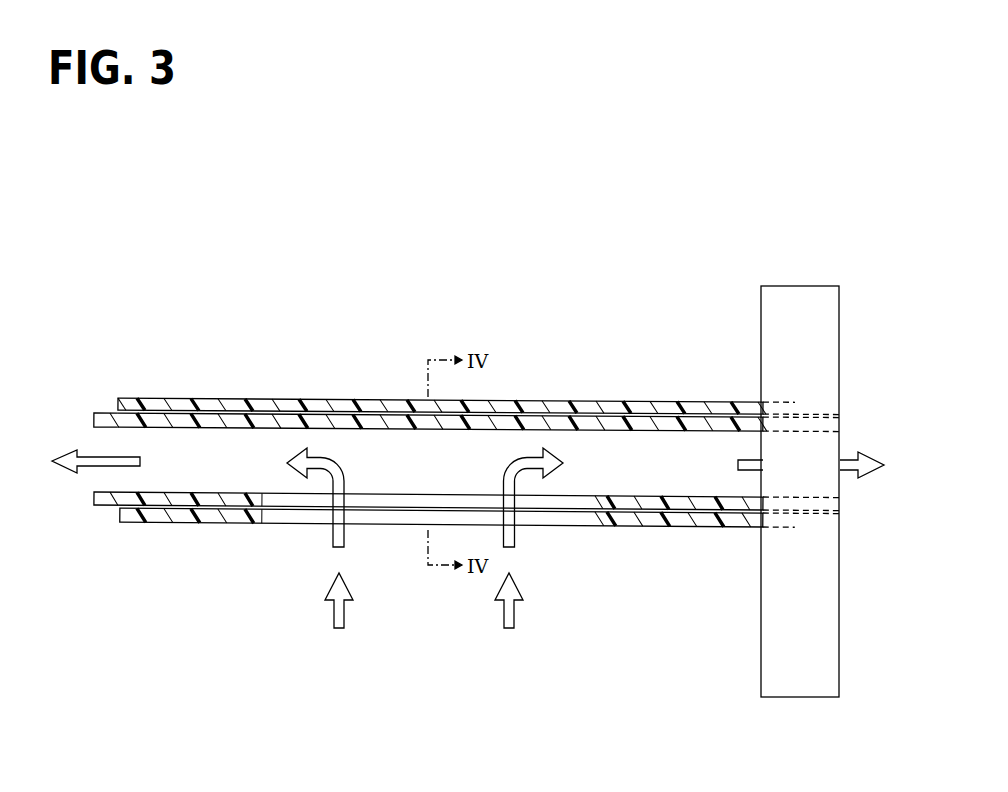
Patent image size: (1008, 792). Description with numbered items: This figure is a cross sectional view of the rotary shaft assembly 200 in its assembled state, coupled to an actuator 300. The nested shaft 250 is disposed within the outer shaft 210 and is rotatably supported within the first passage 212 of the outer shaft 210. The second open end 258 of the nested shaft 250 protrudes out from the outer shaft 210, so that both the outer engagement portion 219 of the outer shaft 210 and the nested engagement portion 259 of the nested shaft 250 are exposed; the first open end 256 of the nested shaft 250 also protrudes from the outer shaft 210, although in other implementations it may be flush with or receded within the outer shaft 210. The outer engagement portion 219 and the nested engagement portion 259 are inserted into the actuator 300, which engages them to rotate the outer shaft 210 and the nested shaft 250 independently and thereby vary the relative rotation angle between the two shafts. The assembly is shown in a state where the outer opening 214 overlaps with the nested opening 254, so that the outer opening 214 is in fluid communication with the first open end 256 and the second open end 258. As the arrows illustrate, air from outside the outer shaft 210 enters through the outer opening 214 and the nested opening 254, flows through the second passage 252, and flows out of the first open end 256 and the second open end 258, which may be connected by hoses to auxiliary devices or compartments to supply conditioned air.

The rotary shaft assembly 200 is at (461, 544).
The outer shaft 210 is at (428, 501).
The first passage 212 is at (441, 517).
The outer opening 214 is at (433, 517).
The outer engagement portion 219 is at (751, 416).
The nested shaft 250 is at (191, 507).
The second passage 252 is at (489, 390).
The nested opening 254 is at (432, 501).
The first open end 256 is at (801, 416).
The second open end 258 is at (110, 412).
The nested engagement portion 259 is at (801, 512).
The actuator 300 is at (808, 286).